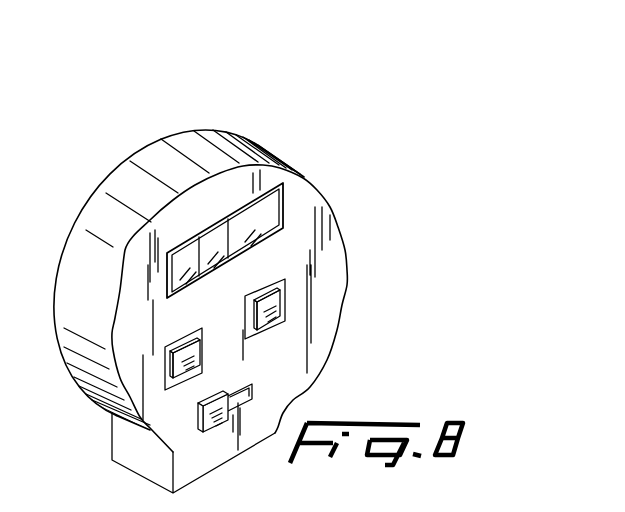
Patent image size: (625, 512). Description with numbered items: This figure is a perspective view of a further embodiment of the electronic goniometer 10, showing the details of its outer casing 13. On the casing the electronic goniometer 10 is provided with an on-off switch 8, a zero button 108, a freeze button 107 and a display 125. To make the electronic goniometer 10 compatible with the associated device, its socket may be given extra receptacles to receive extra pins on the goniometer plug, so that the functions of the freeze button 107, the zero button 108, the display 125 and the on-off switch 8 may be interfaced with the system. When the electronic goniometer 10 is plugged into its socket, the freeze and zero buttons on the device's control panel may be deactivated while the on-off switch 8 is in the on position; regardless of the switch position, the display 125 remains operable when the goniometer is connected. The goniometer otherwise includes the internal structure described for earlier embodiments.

The inclinometer instrument 10 is at (313, 123).
The housing 13 is at (345, 248).
The digital display 125 is at (272, 212).
The freeze switch 107 is at (277, 312).
The zero switch 108 is at (130, 403).
The on-off switch 8 is at (220, 417).